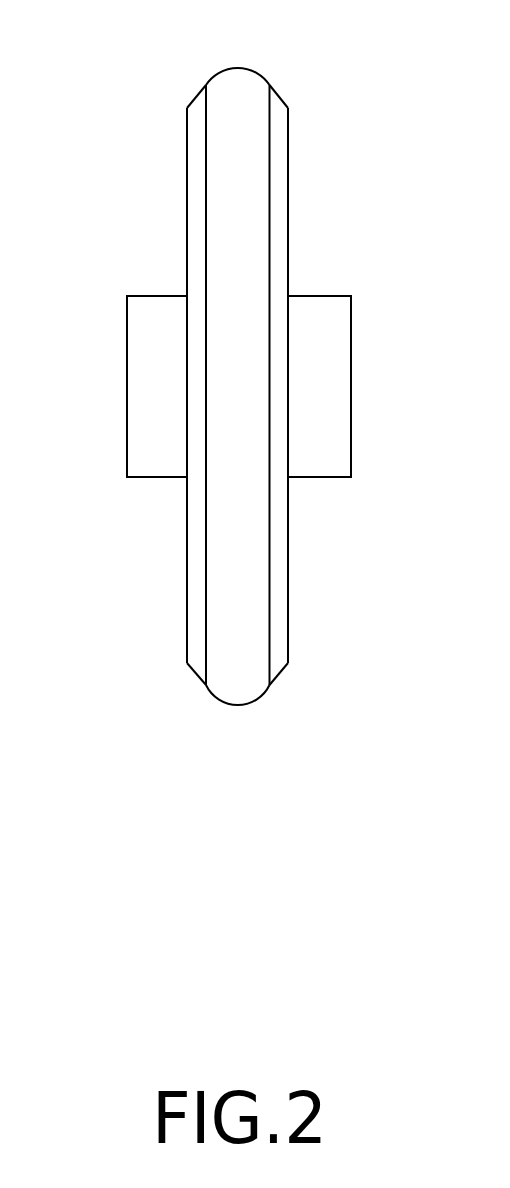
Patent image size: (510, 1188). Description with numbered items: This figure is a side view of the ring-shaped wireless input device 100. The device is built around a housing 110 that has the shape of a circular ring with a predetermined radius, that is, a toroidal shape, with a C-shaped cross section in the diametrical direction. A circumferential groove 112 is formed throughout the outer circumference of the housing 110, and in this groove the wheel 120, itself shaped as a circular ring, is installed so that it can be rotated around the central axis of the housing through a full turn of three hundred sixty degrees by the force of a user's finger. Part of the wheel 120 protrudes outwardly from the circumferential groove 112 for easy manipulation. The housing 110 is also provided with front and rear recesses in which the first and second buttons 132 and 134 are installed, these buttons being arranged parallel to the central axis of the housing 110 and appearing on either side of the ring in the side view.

The wireless input device 100 is at (237, 398).
The housing 110 is at (288, 162).
The circumferential groove 112 is at (207, 520).
The wheel 120 is at (238, 68).
The first button 132 is at (351, 387).
The second button 134 is at (127, 387).